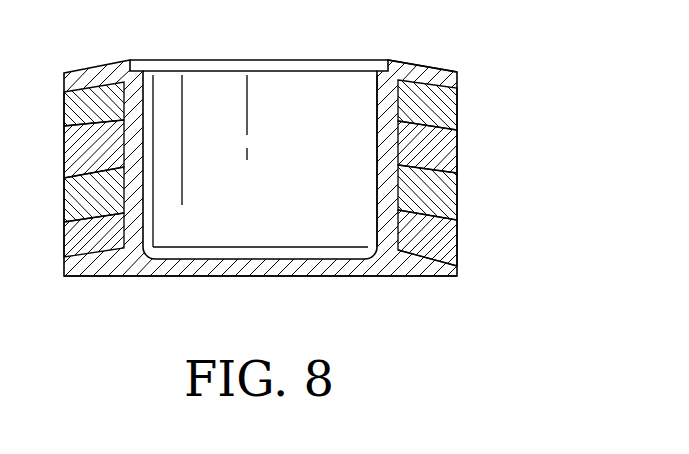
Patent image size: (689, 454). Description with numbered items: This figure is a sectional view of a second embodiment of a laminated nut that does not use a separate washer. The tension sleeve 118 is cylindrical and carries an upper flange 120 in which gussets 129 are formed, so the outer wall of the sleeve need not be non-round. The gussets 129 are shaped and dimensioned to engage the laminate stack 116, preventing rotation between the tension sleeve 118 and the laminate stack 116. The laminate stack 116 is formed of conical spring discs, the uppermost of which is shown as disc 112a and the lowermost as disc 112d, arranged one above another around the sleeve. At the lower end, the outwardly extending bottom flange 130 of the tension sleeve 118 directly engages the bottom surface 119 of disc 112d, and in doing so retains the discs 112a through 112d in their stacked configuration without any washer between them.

The conical spring disc 112a is at (457, 115).
The conical spring disc 112d is at (457, 243).
The laminate stack 116 is at (465, 174).
The tension sleeve 118 is at (377, 200).
The bottom surface 119 is at (457, 263).
The upper flange 120 is at (430, 63).
The gussets 129 is at (458, 71).
The outwardly extending bottom flange 130 is at (430, 277).